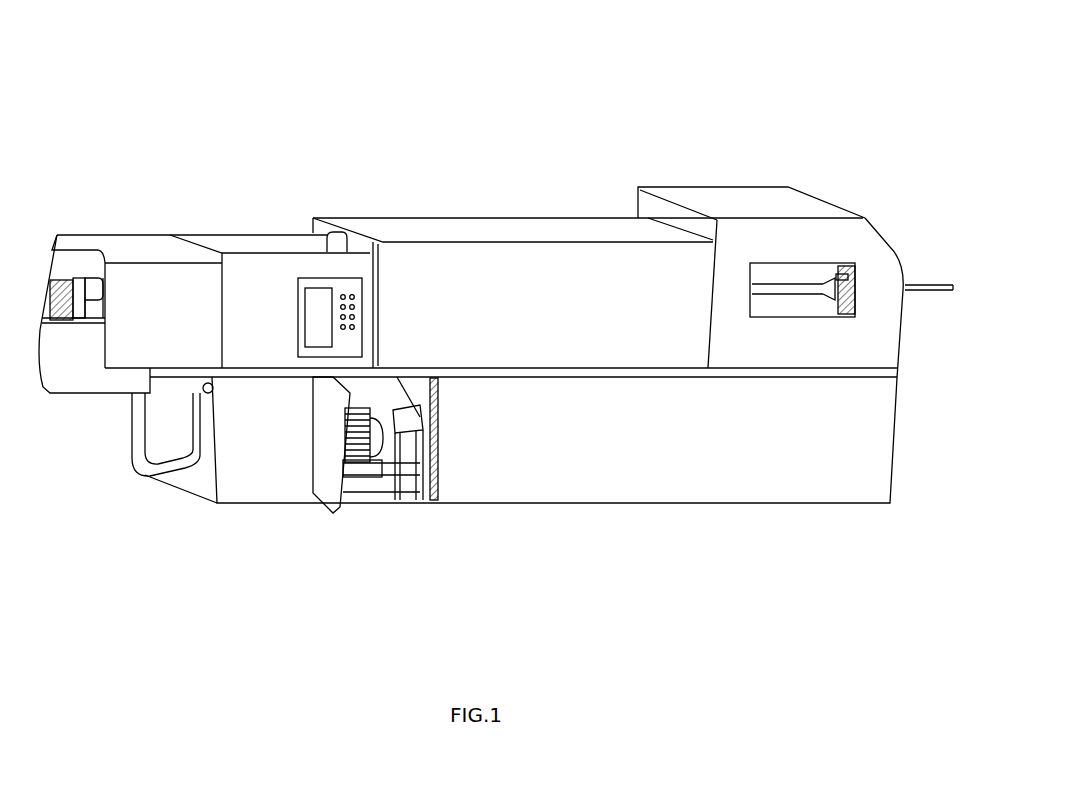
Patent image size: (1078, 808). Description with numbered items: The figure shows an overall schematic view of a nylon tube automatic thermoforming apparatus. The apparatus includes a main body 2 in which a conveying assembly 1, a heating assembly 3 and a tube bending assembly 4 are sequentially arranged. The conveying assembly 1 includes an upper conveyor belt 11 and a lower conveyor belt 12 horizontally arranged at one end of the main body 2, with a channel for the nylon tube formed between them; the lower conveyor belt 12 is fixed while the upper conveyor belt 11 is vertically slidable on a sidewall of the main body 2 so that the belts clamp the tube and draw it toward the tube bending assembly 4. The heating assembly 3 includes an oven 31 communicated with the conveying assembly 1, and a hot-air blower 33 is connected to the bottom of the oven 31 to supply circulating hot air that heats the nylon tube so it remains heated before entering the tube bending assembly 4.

The conveying assembly 1 is at (833, 316).
The main body 2 is at (503, 226).
The heating assembly 3 is at (431, 427).
The tube bending assembly 4 is at (79, 317).
The upper conveyor belt 11 is at (793, 270).
The lower conveyor belt 12 is at (792, 313).
The oven 31 is at (383, 378).
The hot-air blower 33 is at (345, 478).